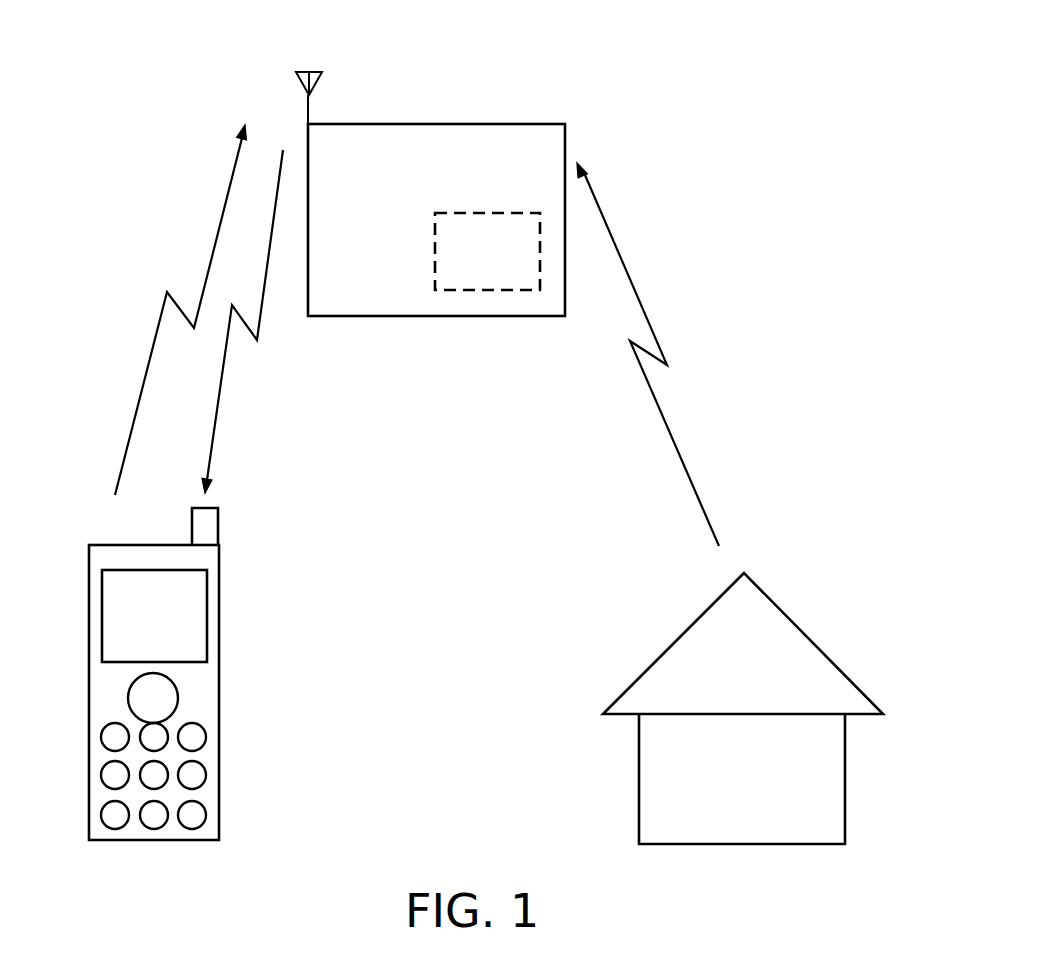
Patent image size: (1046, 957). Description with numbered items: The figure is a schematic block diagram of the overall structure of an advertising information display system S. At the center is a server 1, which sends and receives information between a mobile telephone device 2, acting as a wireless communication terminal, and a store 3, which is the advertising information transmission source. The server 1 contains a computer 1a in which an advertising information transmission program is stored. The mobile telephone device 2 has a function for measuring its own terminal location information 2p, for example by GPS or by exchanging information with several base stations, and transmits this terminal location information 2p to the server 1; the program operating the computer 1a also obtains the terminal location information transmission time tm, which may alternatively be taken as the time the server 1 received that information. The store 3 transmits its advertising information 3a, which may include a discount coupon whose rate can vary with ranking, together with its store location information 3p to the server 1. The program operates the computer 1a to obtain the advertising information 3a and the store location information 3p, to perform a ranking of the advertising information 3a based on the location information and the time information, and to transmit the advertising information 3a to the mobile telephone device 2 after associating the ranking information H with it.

The advertising information display system S is at (636, 71).
The server 1 is at (430, 230).
The computer 1a is at (470, 263).
The mobile telephone device 2 is at (200, 695).
The terminal location information 2p is at (159, 310).
The terminal location information transmission time tm is at (210, 262).
The store 3 is at (657, 801).
The advertising information 3a is at (307, 321).
The store location information 3p is at (656, 337).
The ranking information H is at (220, 407).